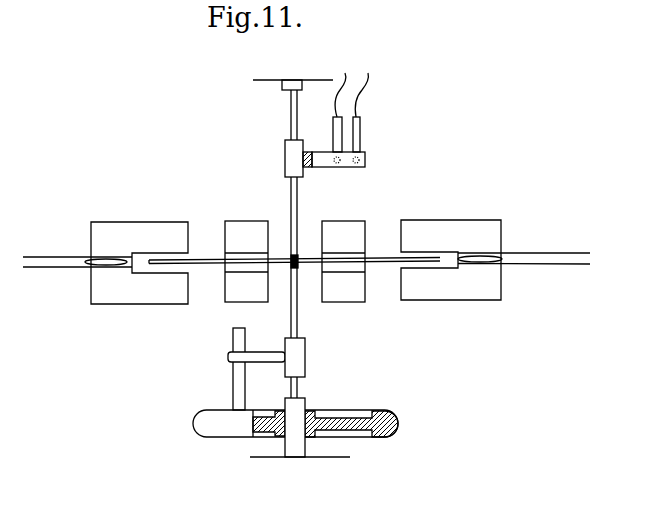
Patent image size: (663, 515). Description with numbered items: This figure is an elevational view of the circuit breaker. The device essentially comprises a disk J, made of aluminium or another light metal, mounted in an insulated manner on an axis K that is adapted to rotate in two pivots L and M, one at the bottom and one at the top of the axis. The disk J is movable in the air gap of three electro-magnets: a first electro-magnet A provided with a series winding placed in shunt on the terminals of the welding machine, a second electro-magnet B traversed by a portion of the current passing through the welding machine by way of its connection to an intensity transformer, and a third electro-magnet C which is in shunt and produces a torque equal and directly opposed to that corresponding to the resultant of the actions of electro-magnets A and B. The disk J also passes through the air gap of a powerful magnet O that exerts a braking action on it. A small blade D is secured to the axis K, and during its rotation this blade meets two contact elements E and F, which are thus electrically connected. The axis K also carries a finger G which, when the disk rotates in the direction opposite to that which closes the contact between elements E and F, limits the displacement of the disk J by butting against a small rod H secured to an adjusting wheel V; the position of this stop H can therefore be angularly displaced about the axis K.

The electro-magnet A is at (138, 230).
The electro-magnet B is at (487, 230).
The electro-magnet C is at (247, 233).
The magnet O is at (348, 232).
The blade D is at (295, 148).
The contact element E is at (337, 121).
The contact element F is at (355, 138).
The finger G is at (293, 360).
The rod H is at (242, 380).
The disk J is at (382, 261).
The axis K is at (298, 320).
The pivot L is at (295, 453).
The pivot M is at (283, 82).
The adjusting wheel V is at (200, 424).